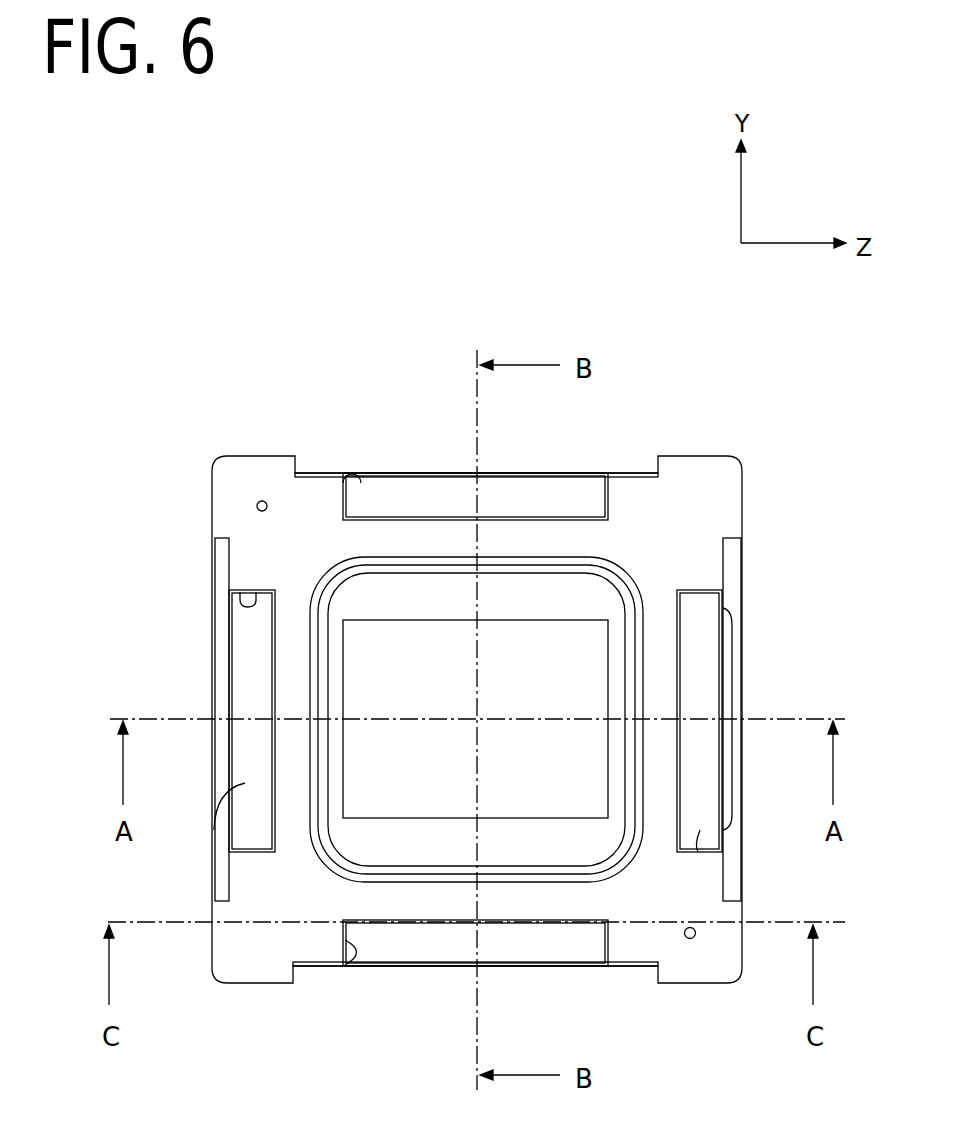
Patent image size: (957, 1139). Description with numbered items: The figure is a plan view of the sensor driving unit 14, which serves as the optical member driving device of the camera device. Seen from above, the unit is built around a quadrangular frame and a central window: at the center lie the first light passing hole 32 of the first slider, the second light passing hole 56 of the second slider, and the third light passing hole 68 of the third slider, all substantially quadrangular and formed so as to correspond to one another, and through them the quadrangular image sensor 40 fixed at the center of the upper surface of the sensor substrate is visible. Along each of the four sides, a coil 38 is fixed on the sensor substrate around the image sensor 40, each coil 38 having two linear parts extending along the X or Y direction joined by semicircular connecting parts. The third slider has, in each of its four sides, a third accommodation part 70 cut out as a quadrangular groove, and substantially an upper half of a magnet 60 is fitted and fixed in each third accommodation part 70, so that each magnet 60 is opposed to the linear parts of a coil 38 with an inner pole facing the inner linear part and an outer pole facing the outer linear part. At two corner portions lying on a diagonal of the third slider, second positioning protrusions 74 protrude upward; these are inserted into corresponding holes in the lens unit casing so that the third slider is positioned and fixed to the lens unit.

The sensor driving unit 14 is at (742, 369).
The first light passing hole 32 is at (532, 573).
The coil 38 is at (405, 473).
The image sensor 40 is at (585, 675).
The second light passing hole 56 is at (608, 582).
The magnet 60 is at (565, 493).
The third light passing hole 68 is at (585, 558).
The third accommodation part 70 is at (350, 476).
The second positioning protrusion 74 is at (261, 500).